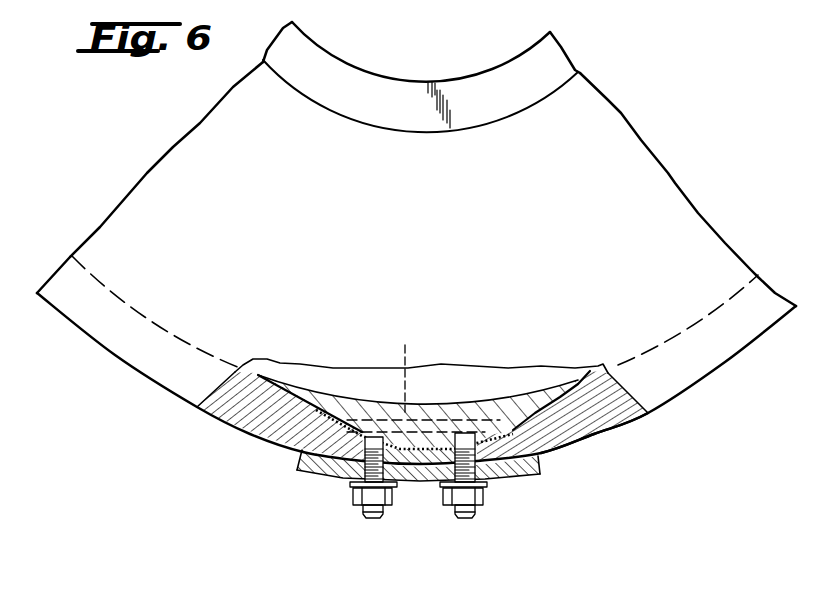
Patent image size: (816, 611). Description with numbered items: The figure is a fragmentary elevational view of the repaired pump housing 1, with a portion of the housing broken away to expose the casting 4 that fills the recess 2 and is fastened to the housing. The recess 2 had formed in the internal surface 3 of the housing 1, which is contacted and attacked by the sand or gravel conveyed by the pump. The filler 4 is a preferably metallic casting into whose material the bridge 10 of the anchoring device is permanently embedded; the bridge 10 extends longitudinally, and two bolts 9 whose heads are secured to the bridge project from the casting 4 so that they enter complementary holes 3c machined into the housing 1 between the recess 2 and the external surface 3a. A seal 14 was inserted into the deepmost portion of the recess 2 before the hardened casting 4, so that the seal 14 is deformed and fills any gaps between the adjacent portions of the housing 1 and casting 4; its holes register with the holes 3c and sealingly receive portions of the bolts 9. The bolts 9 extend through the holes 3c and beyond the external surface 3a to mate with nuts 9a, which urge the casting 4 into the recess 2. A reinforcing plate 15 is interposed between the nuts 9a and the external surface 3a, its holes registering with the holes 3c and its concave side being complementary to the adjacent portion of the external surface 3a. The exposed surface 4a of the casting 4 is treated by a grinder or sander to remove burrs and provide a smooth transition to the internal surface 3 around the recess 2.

The housing 1 is at (664, 115).
The recess 2 is at (318, 416).
The internal surface 3 is at (292, 378).
The external surface 3a is at (673, 430).
The holes or bores 3c is at (327, 466).
The filler or casting 4 is at (459, 393).
The exposed surface of the casting 4a is at (367, 402).
The bolts 9 is at (371, 520).
The nuts 9a is at (353, 498).
The bridge 10 is at (405, 367).
The seal 14 is at (511, 429).
The reinforcing plate 15 is at (521, 466).